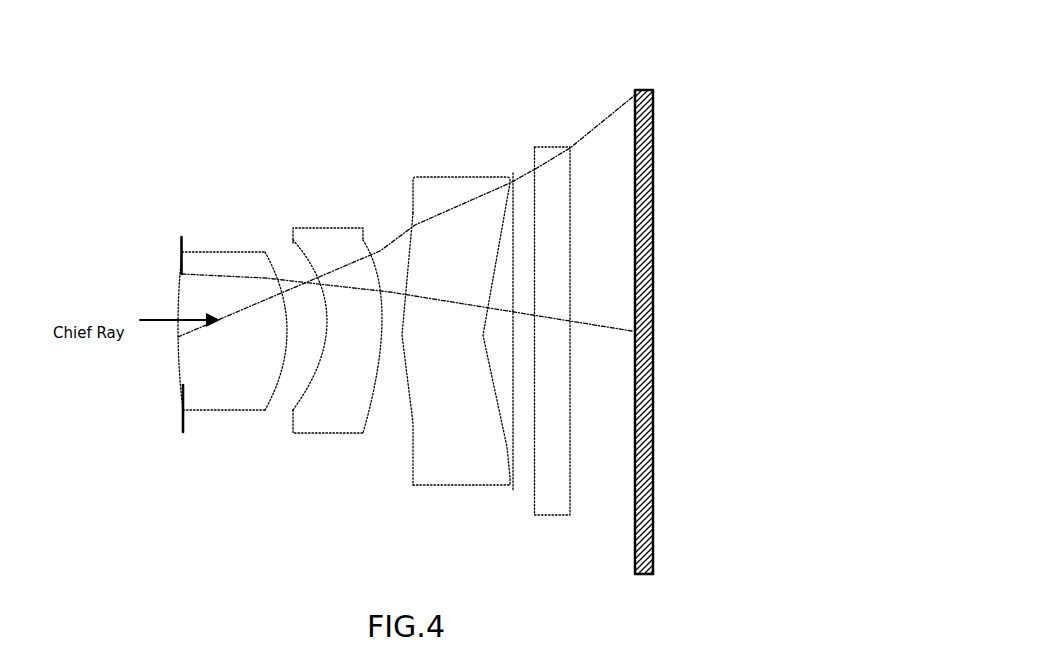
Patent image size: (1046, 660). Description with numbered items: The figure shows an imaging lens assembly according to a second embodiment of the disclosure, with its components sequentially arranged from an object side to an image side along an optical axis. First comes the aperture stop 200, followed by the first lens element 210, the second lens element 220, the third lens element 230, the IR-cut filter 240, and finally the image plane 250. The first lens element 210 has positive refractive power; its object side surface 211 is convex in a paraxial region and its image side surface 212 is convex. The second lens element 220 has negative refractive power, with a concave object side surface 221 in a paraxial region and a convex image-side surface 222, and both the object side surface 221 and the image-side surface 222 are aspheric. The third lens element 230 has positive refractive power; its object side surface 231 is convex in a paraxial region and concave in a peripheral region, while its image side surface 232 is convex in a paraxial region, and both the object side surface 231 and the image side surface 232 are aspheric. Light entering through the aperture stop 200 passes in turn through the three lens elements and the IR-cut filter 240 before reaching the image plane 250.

The aperture stop 200 is at (183, 227).
The first lens element 210 is at (207, 328).
The object side surface 211 is at (170, 384).
The image side surface 212 is at (266, 383).
The second lens element 220 is at (322, 319).
The object side surface 221 is at (296, 388).
The image-side surface 222 is at (368, 383).
The third lens element 230 is at (439, 319).
The object side surface 231 is at (408, 430).
The image side surface 232 is at (496, 447).
The IR-cut filter 240 is at (551, 135).
The image plane 250 is at (661, 81).